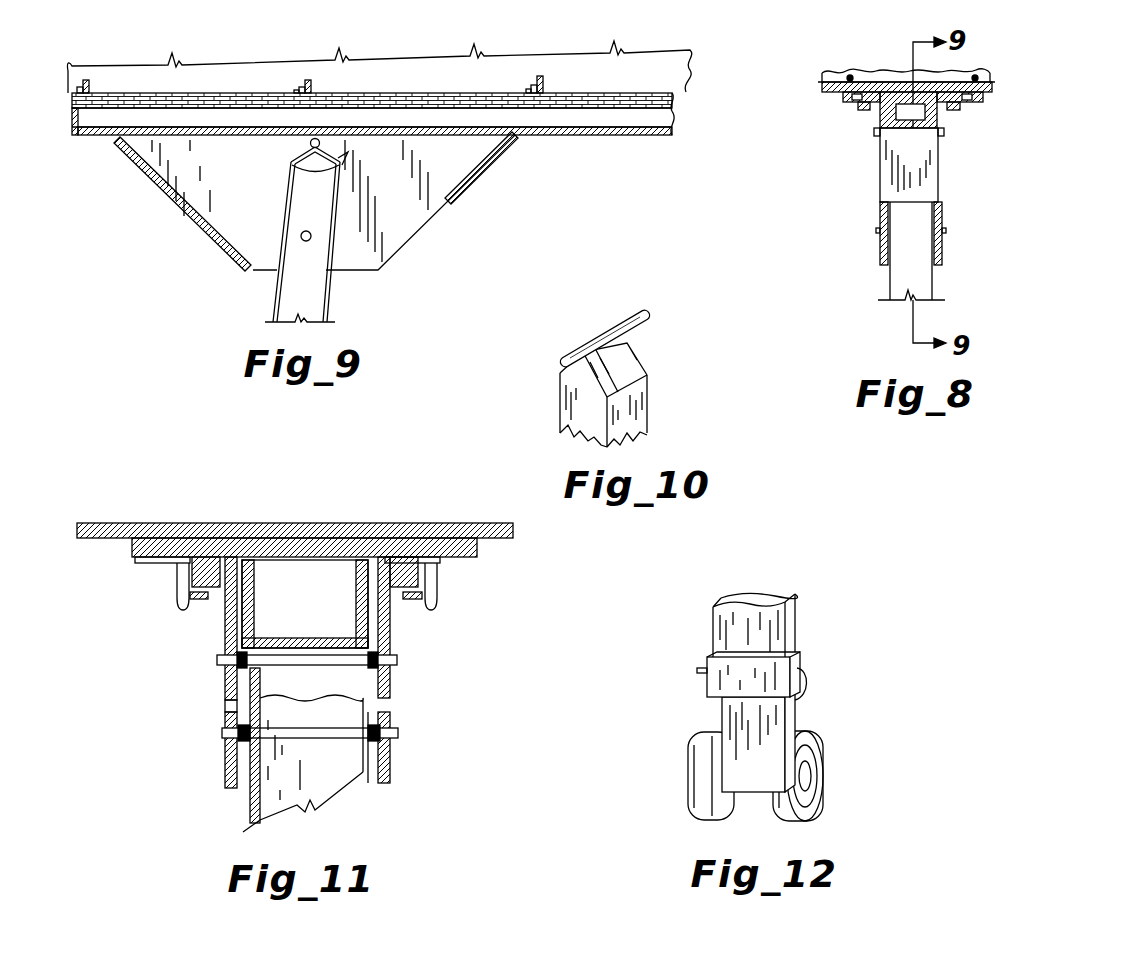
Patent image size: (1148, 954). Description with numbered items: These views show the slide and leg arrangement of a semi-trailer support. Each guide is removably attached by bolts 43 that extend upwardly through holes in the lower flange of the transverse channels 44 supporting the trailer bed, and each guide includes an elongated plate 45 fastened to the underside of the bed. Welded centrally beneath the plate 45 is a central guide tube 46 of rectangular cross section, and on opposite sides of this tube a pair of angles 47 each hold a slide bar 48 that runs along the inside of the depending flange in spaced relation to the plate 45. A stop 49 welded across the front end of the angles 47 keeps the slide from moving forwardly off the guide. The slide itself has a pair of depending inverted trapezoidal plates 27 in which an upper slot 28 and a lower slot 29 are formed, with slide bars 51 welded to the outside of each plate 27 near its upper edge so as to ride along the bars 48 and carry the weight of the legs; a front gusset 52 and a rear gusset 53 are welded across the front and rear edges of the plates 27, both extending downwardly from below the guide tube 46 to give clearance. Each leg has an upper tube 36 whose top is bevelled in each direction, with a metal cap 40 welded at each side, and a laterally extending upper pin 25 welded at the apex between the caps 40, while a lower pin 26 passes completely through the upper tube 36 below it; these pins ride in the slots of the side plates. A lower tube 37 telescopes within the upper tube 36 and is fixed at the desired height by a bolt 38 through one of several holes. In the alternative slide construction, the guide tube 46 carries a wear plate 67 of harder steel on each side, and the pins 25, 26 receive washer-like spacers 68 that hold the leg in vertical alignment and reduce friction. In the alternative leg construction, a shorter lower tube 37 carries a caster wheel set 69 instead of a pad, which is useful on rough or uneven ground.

In FIG. 9, the upper pin 25 is at (321, 144).
In FIG. 8, the upper pin 25 is at (943, 129).
In FIG. 10, the upper pin 25 is at (613, 321).
In FIG. 11, the upper pin 25 is at (332, 662).
In FIG. 9, the lower pin 26 is at (301, 236).
In FIG. 8, the lower pin 26 is at (875, 232).
In FIG. 11, the lower pin 26 is at (398, 734).
In FIG. 9, the depending parallel inverted trapezoidal shaped plates 27 is at (400, 235).
In FIG. 8, the depending parallel inverted trapezoidal shaped plates 27 is at (943, 232).
In FIG. 11, the depending parallel inverted trapezoidal shaped plates 27 is at (392, 762).
In FIG. 11, the upper slot 28 is at (230, 692).
In FIG. 11, the lower slot 29 is at (232, 745).
In FIG. 9, the upper tube 36 is at (325, 291).
In FIG. 10, the upper tube 36 is at (585, 418).
In FIG. 11, the upper tube 36 is at (262, 750).
In FIG. 12, the upper tube 36 is at (798, 628).
In FIG. 8, the lower tube 37 is at (888, 297).
In FIG. 12, the lower tube 37 is at (800, 718).
In FIG. 12, the bolt 38 is at (806, 683).
In FIG. 9, the metal cap 40 is at (298, 158).
In FIG. 10, the metal cap 40 is at (560, 372).
In FIG. 9, the bolts 43 is at (304, 83).
In FIG. 8, the bolts 43 is at (850, 75).
In FIG. 9, the transverse channels 44 is at (318, 84).
In FIG. 8, the transverse channels 44 is at (826, 84).
In FIG. 9, the elongated plate 45 is at (600, 93).
In FIG. 8, the elongated plate 45 is at (887, 96).
In FIG. 11, the elongated plate 45 is at (345, 538).
In FIG. 9, the central guide tube 46 is at (578, 136).
In FIG. 8, the central guide tube 46 is at (905, 123).
In FIG. 11, the central guide tube 46 is at (316, 570).
In FIG. 8, the angles 47 is at (862, 109).
In FIG. 11, the angles 47 is at (170, 578).
In FIG. 8, the slide bar 48 is at (873, 118).
In FIG. 11, the slide bar 48 is at (192, 596).
In FIG. 9, the stop 49 is at (66, 118).
In FIG. 8, the slide bars 51 is at (878, 122).
In FIG. 11, the slide bars 51 is at (212, 558).
In FIG. 9, the front gusset 52 is at (186, 221).
In FIG. 9, the rear gusset 53 is at (470, 187).
In FIG. 8, the rear gusset 53 is at (940, 181).
In FIG. 11, the wear plate 67 is at (238, 618).
In FIG. 11, the spacers 68 is at (222, 672).
In FIG. 12, the caster wheel set 69 is at (688, 771).